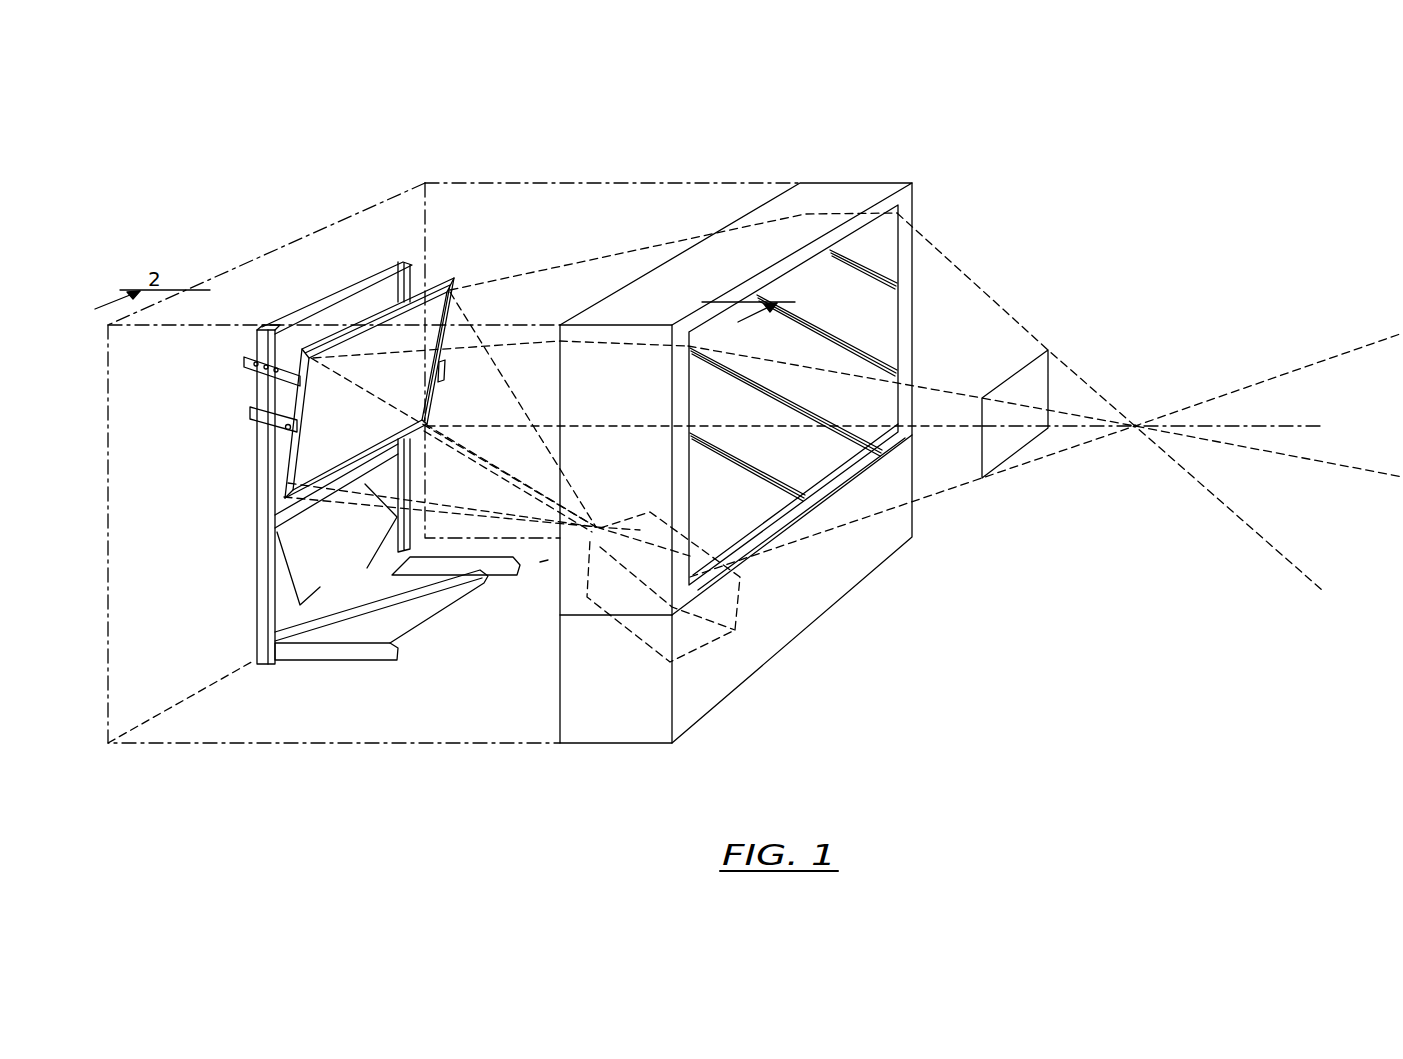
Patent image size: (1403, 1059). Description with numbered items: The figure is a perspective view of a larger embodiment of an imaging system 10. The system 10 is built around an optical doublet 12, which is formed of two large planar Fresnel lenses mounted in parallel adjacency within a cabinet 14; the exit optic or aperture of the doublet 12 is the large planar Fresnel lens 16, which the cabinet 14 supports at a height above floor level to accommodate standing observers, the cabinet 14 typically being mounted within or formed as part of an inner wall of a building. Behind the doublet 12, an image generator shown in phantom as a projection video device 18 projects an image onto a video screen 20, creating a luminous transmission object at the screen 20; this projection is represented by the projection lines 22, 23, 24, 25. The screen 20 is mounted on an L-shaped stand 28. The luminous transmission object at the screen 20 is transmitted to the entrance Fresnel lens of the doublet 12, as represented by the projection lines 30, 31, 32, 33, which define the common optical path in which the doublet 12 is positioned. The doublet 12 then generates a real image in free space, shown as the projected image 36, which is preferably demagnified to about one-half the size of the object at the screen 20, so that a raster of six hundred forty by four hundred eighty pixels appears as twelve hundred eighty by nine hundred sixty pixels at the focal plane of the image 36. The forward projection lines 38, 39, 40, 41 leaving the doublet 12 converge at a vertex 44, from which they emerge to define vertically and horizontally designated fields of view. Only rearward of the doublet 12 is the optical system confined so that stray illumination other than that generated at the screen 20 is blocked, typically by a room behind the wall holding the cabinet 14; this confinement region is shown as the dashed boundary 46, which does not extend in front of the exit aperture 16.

The imaging system 10 is at (822, 130).
The optical doublet 12 is at (759, 709).
The cabinet 14 is at (767, 640).
The planar Fresnel lens 16 is at (880, 317).
The projection video device 18 is at (633, 632).
The video screen 20 is at (455, 288).
The projection line 22 is at (443, 508).
The projection line 23 is at (365, 395).
The projection line 24 is at (503, 384).
The projection line 25 is at (483, 460).
The L-shaped stand 28 is at (262, 582).
The projection line 30 is at (583, 265).
The projection line 31 is at (506, 318).
The projection line 32 is at (715, 425).
The projection line 33 is at (537, 567).
The projected image 36 is at (995, 445).
The forward projection line 38 is at (930, 385).
The forward projection line 39 is at (820, 533).
The forward projection line 40 is at (1005, 305).
The forward projection line 41 is at (962, 432).
The vertex 44 is at (1135, 424).
The dashed boundary 46 is at (612, 180).